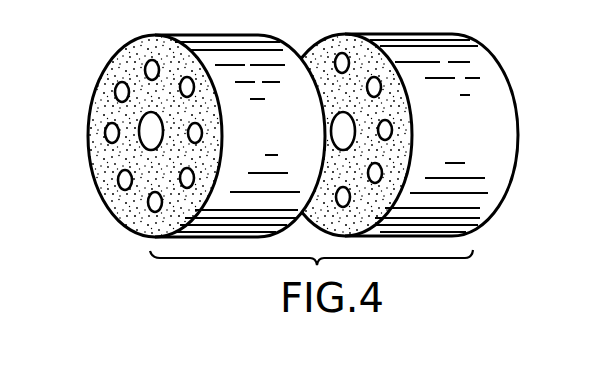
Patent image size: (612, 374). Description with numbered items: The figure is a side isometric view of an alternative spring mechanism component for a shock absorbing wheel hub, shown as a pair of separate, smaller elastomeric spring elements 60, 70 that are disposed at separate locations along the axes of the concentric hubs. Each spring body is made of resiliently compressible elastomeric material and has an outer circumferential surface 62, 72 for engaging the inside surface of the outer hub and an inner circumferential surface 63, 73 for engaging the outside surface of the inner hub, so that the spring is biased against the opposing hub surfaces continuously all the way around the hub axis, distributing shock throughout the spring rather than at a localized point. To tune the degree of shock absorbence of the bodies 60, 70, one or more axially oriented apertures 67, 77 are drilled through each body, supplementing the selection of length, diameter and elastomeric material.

The spring element 60 is at (127, 60).
The outer circumferential surface 62 is at (215, 60).
The inner circumferential surface 63 is at (142, 142).
The axially oriented apertures 67 is at (117, 90).
The spring element 70 is at (318, 53).
The outer circumferential surface 72 is at (480, 72).
The inner circumferential surface 73 is at (343, 128).
The axially oriented apertures 77 is at (378, 166).